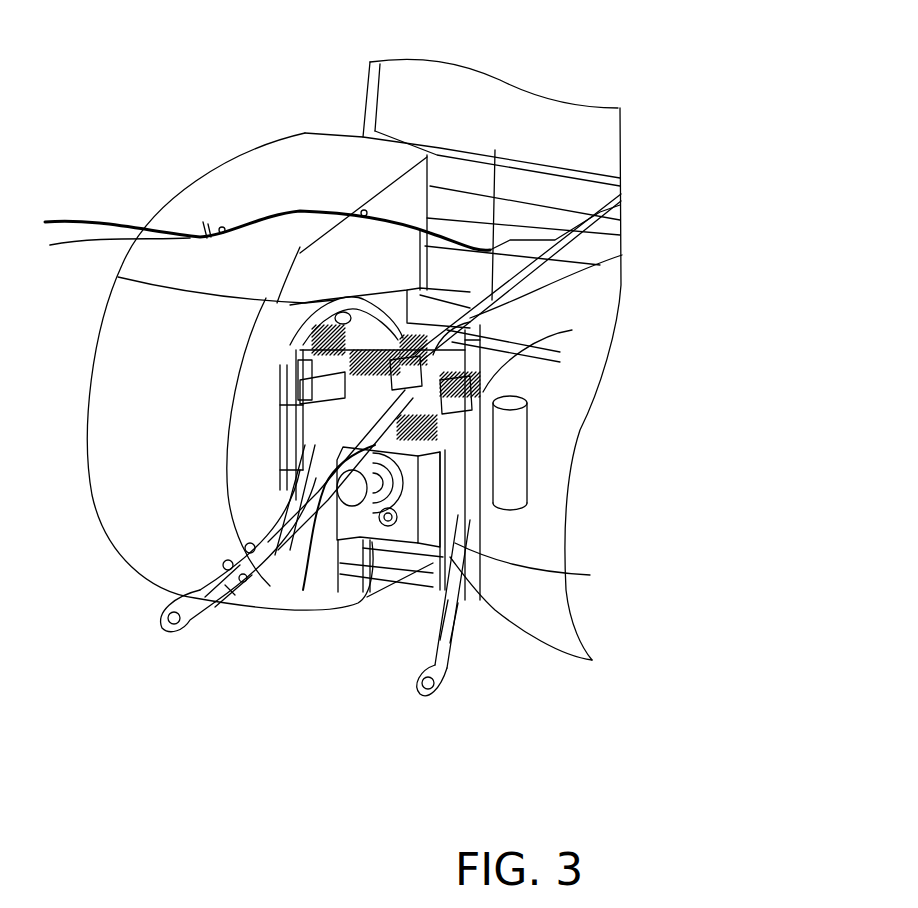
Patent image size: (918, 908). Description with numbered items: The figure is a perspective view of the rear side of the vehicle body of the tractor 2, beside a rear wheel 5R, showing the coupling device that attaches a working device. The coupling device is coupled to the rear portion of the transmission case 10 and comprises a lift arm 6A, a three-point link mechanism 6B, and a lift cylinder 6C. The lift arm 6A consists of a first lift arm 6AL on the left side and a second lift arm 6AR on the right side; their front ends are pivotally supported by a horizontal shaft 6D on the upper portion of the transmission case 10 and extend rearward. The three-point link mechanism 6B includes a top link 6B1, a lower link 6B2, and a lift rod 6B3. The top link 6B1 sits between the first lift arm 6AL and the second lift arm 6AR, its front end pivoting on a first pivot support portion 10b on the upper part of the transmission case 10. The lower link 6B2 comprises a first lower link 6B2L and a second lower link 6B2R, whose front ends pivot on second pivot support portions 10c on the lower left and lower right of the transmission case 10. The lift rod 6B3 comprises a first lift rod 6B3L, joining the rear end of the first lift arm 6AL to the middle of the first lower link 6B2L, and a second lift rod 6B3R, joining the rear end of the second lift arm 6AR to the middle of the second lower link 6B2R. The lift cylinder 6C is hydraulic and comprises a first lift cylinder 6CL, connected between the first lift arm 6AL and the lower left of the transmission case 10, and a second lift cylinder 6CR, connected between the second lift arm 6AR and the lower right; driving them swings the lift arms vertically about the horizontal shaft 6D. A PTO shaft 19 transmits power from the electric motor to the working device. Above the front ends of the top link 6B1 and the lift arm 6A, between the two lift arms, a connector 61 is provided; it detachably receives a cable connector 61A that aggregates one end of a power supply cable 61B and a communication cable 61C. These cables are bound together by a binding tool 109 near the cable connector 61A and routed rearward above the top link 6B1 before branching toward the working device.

The tractor 2 is at (360, 70).
The rear wheel 5R is at (116, 323).
The connector 61 is at (495, 150).
The cable connector 61A is at (622, 198).
The power supply cable 61B is at (70, 221).
The communication cable 61C is at (52, 246).
The binding tool 109 is at (221, 229).
The transmission case 10 is at (527, 403).
The first pivot support portion 10b is at (622, 255).
The second pivot support portion 10c is at (303, 590).
The PTO shaft 19 is at (365, 542).
The lift arm 6A is at (327, 347).
The first lift arm 6AL is at (310, 317).
The second lift arm 6AR is at (565, 356).
The three-point link mechanism 6B is at (286, 470).
The top link 6B1 is at (300, 423).
The lower link 6B2 is at (209, 635).
The first lower link 6B2L is at (208, 597).
The second lower link 6B2R is at (458, 642).
The lift rod 6B3 is at (174, 559).
The first lift rod 6B3L is at (300, 457).
The second lift rod 6B3R is at (457, 545).
The lift cylinder 6C is at (303, 398).
The first lift cylinder 6CL is at (300, 386).
The second lift cylinder 6CR is at (568, 508).
The horizontal shaft 6D is at (480, 312).